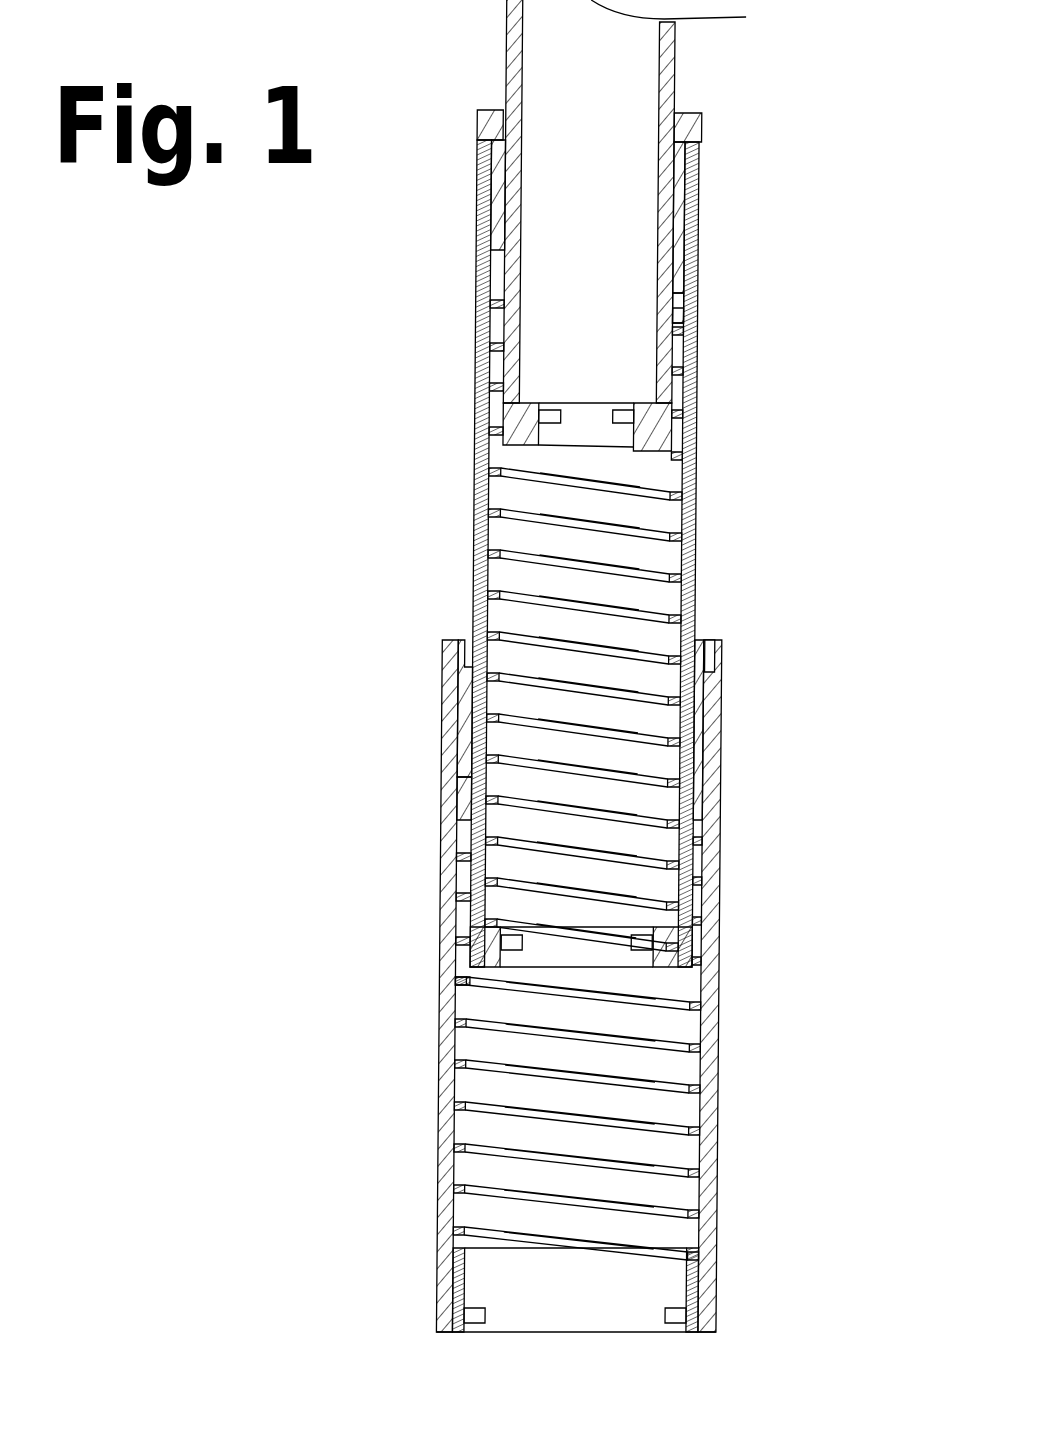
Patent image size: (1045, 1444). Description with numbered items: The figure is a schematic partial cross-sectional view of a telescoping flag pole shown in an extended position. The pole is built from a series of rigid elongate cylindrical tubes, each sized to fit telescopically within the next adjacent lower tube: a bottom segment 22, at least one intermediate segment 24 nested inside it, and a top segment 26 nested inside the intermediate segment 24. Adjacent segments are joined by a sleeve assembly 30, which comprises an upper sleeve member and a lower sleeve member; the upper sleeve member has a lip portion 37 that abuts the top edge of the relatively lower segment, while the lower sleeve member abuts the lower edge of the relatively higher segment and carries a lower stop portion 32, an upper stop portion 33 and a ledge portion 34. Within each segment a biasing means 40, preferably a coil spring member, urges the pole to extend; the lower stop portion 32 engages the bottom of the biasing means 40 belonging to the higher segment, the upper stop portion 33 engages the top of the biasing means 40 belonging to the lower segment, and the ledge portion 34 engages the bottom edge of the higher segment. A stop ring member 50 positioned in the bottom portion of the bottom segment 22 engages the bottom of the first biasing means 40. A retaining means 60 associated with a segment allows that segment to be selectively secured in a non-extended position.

The bottom segment 22 is at (712, 1060).
The intermediate segment 24 is at (699, 498).
The top segment 26 is at (672, 24).
The sleeve assembly 30 is at (463, 781).
The lower stop portion 32 is at (699, 392).
The upper stop portion 33 is at (632, 396).
The ledge portion 34 is at (521, 279).
The lip portion 37 is at (703, 120).
The biasing means 40 is at (607, 688).
The stop ring member 50 is at (463, 1292).
The retaining means 60 is at (538, 403).